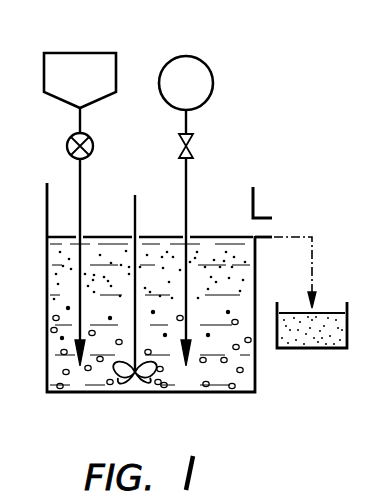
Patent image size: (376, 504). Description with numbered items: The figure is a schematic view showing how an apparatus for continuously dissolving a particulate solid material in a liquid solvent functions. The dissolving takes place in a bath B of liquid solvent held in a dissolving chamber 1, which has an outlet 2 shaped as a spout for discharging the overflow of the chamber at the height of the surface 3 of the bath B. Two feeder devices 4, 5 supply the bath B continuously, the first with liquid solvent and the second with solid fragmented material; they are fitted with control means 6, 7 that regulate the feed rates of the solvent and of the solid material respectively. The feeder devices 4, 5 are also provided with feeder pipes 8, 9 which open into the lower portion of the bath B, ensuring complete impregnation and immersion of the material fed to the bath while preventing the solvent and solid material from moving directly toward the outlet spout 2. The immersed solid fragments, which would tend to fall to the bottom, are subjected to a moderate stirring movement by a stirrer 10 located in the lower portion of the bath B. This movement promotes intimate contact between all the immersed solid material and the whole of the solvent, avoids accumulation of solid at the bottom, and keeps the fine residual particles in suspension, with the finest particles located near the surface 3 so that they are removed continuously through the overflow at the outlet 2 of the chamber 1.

The dissolving chamber 1 is at (47, 287).
The outlet 2 is at (266, 227).
The surface 3 is at (153, 237).
The feeder device 4 is at (186, 58).
The feeder device 5 is at (79, 53).
The control means 6 is at (192, 146).
The control means 7 is at (67, 146).
The feeder pipe 8 is at (188, 199).
The feeder pipe 9 is at (81, 199).
The stirrer 10 is at (128, 378).
The bath B is at (58, 352).